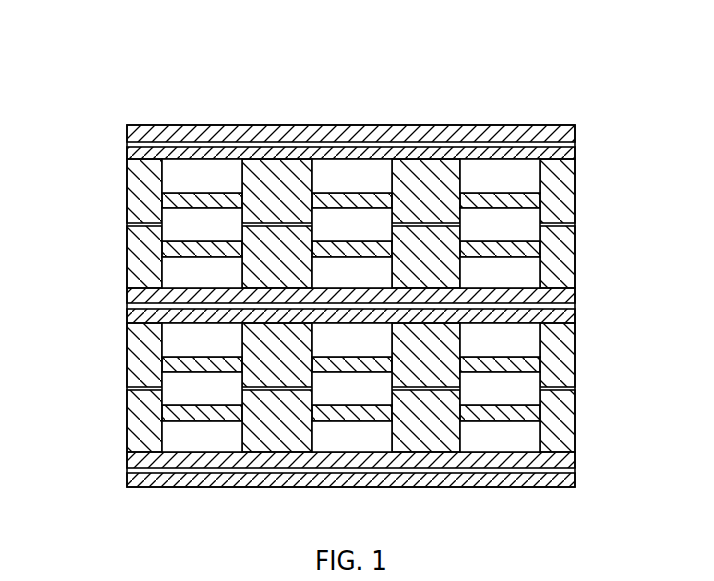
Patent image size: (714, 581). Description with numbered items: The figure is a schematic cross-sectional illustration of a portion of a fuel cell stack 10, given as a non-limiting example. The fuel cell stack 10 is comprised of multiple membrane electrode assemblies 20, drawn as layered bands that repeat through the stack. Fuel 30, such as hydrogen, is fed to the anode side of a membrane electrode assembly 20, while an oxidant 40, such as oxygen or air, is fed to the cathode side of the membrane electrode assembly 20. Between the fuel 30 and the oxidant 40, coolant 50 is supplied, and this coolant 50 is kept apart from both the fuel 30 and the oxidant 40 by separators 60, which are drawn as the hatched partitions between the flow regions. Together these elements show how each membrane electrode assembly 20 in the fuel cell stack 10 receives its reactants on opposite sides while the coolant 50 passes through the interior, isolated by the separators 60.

The fuel cell stack 10 is at (175, 100).
The membrane electrode assembly 20 is at (587, 128).
The fuel 30 is at (167, 183).
The oxidant 40 is at (177, 277).
The coolant 50 is at (173, 235).
The separator 60 is at (553, 193).